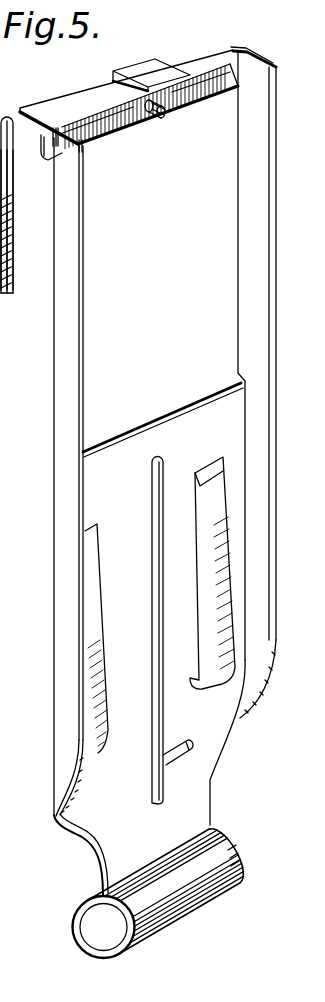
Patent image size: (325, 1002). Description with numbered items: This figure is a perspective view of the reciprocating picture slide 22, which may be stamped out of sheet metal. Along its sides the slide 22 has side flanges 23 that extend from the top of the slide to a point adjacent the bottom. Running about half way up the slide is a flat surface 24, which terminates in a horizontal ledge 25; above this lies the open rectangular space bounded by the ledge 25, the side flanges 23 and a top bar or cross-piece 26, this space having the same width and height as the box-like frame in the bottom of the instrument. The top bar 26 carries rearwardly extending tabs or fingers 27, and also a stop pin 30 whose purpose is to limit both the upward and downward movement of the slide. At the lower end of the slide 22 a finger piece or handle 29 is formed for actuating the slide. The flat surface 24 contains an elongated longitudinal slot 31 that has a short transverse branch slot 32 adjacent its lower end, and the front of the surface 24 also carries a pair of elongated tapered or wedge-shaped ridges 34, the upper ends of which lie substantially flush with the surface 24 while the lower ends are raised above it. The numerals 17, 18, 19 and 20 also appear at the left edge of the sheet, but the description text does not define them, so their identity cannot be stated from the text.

The panel member 17 is at (11, 298).
The panel member 18 is at (8, 278).
The panel member 19 is at (8, 260).
The panel member 20 is at (10, 292).
The reciprocating picture slide 22 is at (93, 827).
The side flanges 23 is at (84, 272).
The flat surface 24 is at (120, 656).
The horizontal ledge 25 is at (179, 400).
The top bar 26 is at (179, 92).
The rearwardly extending tabs 27 is at (63, 100).
The finger piece 29 is at (80, 926).
The stop pin 30 is at (164, 118).
The elongated longitudinal slot 31 is at (152, 470).
The transverse branch slot 32 is at (186, 742).
The wedge-shaped ridges 34 is at (218, 450).